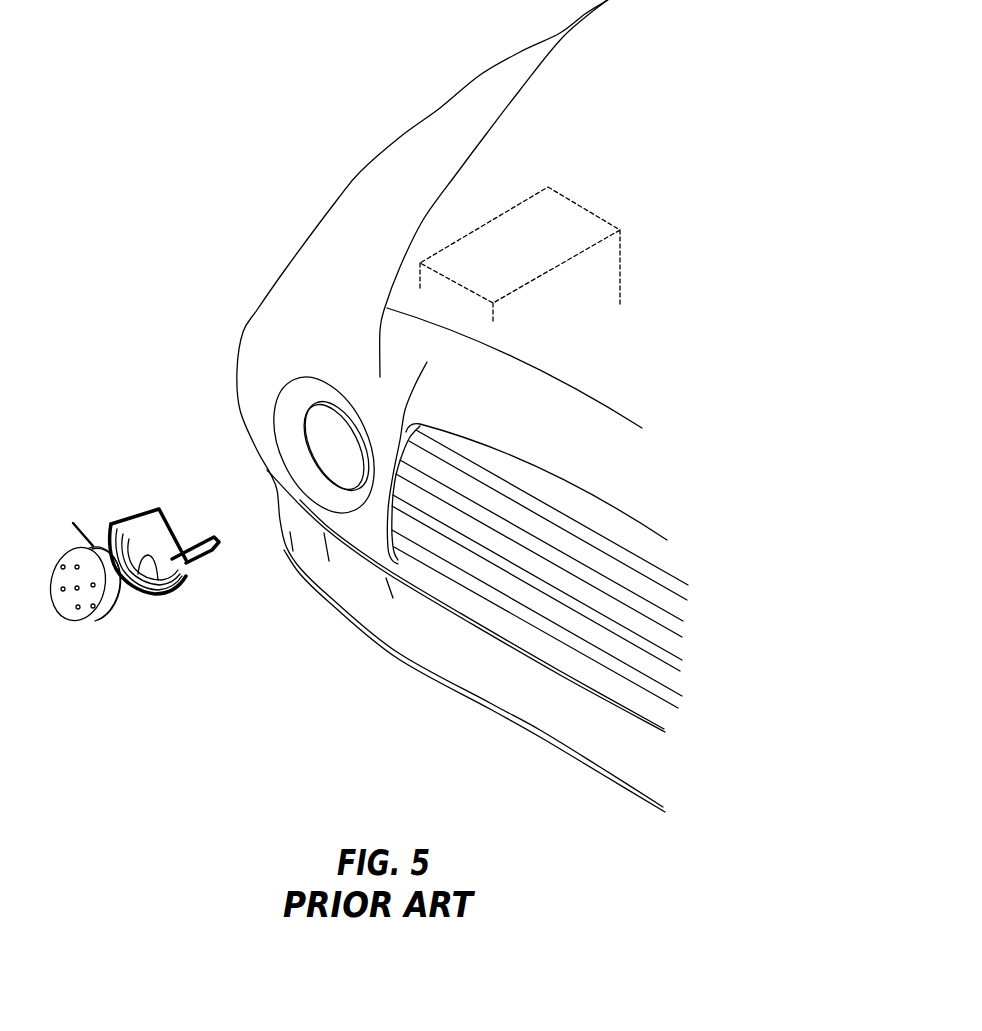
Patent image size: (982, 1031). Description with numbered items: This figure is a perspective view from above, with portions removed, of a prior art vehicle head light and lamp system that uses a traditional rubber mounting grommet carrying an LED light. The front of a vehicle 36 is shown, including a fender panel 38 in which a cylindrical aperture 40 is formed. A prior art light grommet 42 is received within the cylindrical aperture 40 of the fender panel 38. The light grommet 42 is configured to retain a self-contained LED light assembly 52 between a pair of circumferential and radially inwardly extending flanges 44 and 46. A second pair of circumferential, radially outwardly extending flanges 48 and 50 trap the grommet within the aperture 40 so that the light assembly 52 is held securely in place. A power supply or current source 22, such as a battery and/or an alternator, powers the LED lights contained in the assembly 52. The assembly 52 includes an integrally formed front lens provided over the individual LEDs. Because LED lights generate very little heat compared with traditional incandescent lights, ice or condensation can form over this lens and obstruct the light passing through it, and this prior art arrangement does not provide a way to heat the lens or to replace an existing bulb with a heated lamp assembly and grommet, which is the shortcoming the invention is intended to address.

The power supply 22 is at (493, 243).
The vehicle 36 is at (257, 308).
The fender panel 38 is at (250, 388).
The cylindrical aperture 40 is at (330, 450).
The light grommet 42 is at (164, 560).
The radially inwardly extending flange 44 is at (155, 590).
The radially inwardly extending flange 46 is at (173, 517).
The radially outwardly extending flange 48 is at (110, 526).
The radially outwardly extending flange 50 is at (117, 522).
The LED light assembly 52 is at (80, 617).